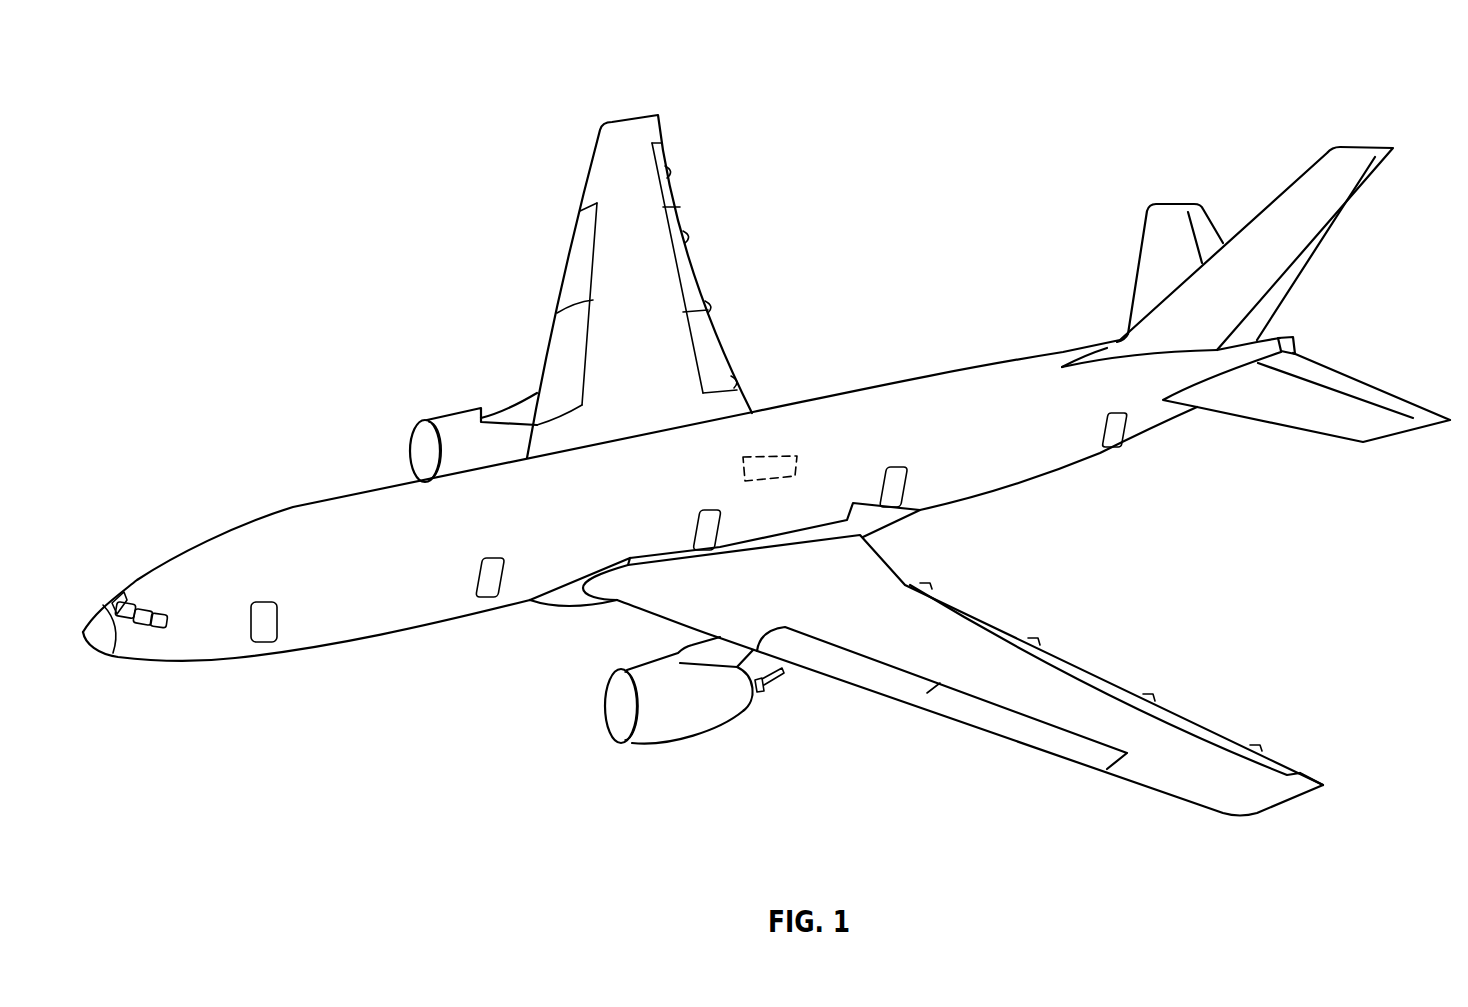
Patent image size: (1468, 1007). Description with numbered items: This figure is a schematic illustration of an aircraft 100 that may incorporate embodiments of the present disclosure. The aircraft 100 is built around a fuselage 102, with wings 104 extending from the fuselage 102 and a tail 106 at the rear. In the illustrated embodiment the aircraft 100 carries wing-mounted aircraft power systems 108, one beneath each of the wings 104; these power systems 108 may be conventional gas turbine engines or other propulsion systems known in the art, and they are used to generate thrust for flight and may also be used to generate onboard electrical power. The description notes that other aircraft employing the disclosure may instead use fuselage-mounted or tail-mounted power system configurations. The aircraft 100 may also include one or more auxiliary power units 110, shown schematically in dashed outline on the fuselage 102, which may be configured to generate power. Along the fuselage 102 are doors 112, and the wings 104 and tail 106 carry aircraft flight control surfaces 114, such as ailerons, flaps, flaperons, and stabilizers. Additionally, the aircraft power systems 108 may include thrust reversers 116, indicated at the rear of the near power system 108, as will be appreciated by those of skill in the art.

The aircraft 100 is at (1340, 84).
The fuselage 102 is at (845, 415).
The wings 104 is at (658, 285).
The tail 106 is at (1290, 342).
The wing-mounted aircraft power systems 108 is at (448, 425).
The auxiliary power unit 110 is at (772, 460).
The doors 112 is at (262, 625).
The aircraft flight control surfaces 114 is at (1352, 200).
The thrust reversers 116 is at (752, 690).